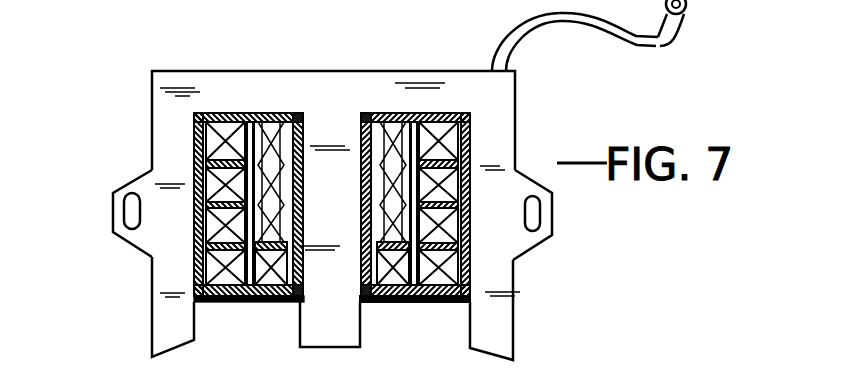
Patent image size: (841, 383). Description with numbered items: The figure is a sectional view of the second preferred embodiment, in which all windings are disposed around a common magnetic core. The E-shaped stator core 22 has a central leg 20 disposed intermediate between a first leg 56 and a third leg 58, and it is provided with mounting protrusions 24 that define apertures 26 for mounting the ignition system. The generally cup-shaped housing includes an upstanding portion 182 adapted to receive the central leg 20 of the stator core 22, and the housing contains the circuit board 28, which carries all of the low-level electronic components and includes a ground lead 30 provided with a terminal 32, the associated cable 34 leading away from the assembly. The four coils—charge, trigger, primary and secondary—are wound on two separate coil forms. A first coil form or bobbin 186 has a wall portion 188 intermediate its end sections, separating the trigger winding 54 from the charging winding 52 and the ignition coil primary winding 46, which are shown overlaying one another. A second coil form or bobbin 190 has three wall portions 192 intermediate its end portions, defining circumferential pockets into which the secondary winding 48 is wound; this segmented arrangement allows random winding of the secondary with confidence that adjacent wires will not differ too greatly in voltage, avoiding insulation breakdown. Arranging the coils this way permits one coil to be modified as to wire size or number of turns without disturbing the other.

The central leg 20 is at (342, 348).
The E-shaped stator core 22 is at (404, 70).
The mounting protrusions 24 is at (549, 242).
The apertures 26 is at (122, 228).
The circuit board 28 is at (113, 197).
The ground lead 30 is at (640, 47).
The terminal 32 is at (690, 5).
The cable 34 is at (575, 52).
The ignition coil primary winding 46 is at (264, 122).
The secondary winding 48 is at (184, 142).
The charging winding 52 is at (283, 114).
The trigger winding 54 is at (381, 304).
The first leg 56 is at (156, 338).
The third leg 58 is at (500, 343).
The upstanding portion 182 is at (362, 124).
The first coil form or bobbin 186 is at (290, 303).
The wall portion 188 is at (274, 303).
The second coil form or bobbin 190 is at (214, 112).
The wall portions 192 is at (194, 250).